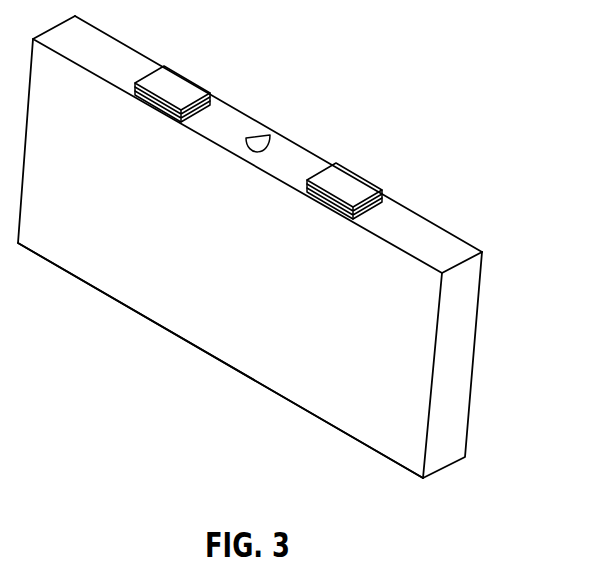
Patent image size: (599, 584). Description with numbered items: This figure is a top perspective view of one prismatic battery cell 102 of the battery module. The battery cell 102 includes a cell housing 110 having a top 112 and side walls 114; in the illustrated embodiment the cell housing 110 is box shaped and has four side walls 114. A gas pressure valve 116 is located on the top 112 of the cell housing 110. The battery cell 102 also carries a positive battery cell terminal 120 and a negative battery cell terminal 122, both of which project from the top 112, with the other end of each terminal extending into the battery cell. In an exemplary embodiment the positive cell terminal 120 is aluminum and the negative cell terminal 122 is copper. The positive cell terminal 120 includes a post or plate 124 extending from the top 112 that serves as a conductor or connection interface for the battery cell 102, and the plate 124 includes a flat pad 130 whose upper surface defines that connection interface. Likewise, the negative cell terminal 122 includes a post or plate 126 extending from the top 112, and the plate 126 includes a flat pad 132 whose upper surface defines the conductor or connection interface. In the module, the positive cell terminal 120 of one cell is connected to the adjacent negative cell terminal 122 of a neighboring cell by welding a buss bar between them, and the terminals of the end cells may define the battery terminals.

The prismatic battery cell 102 is at (310, 79).
The cell housing 110 is at (290, 260).
The top 112 is at (303, 153).
The side walls 114 is at (428, 218).
The gas pressure valve 116 is at (258, 137).
The positive battery cell terminal 120 is at (347, 188).
The negative battery cell terminal 122 is at (220, 68).
The plate 124 is at (392, 163).
The plate 126 is at (183, 90).
The flat pad 130 is at (372, 197).
The flat pad 132 is at (163, 82).